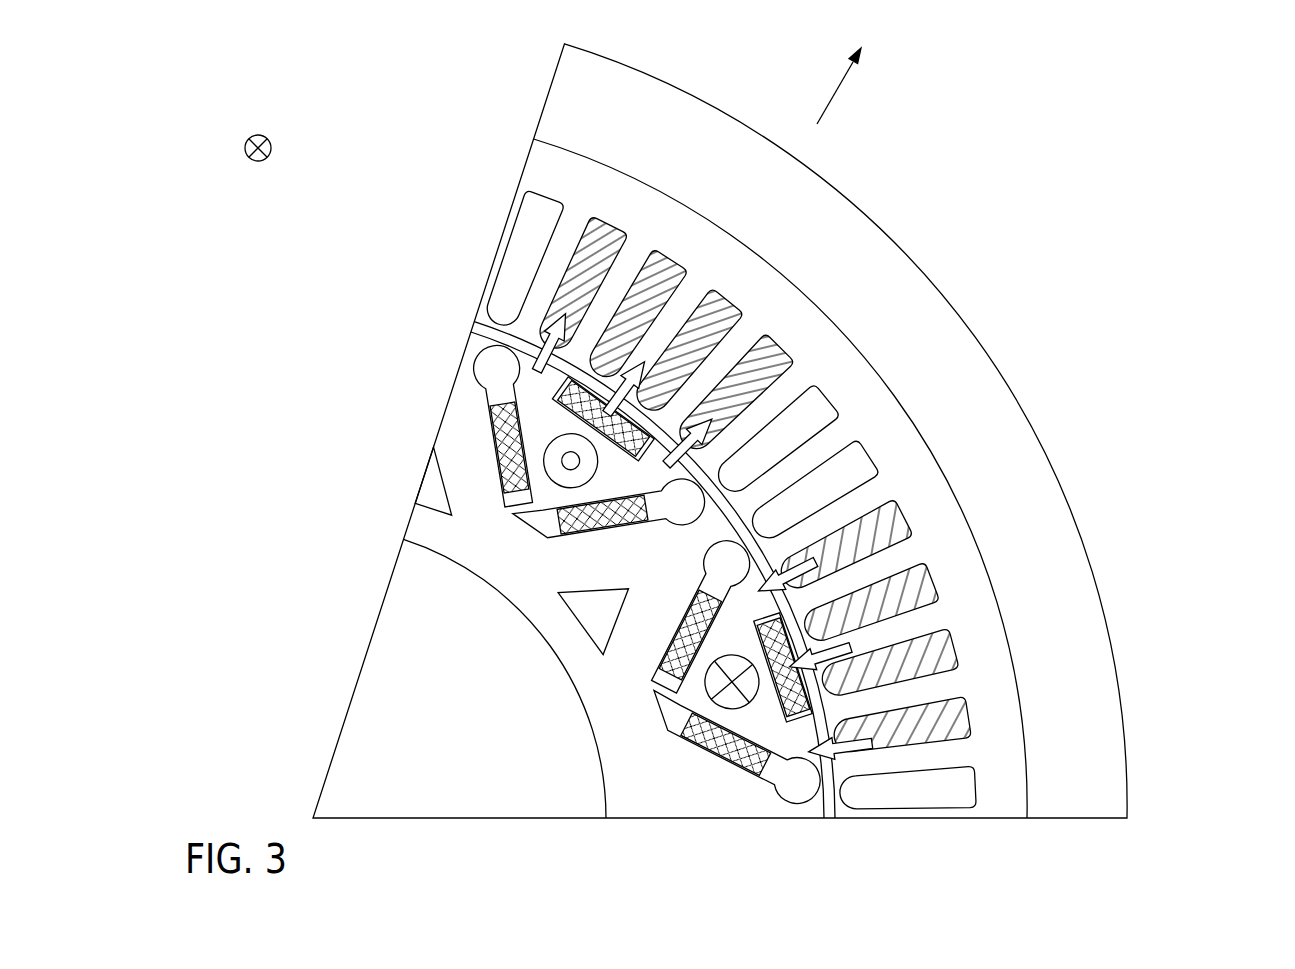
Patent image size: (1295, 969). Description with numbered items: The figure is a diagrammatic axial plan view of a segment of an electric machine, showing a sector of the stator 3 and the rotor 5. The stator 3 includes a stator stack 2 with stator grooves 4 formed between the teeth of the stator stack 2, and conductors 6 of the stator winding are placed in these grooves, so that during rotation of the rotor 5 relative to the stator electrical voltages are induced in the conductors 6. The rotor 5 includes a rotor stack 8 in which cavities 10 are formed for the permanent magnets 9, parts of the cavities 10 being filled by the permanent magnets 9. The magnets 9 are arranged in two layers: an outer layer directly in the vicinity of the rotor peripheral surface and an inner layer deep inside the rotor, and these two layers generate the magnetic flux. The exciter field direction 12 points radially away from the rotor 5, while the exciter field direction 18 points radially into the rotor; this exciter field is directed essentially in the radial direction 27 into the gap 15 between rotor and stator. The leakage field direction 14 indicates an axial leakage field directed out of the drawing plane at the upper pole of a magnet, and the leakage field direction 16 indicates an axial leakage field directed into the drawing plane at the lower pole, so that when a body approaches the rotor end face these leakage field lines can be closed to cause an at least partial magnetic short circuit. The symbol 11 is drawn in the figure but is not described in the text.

The stator stack 2 is at (670, 235).
The stator 3 is at (446, 155).
The stator grooves 4 is at (839, 343).
The conductors 6 is at (672, 362).
The rotor 5 is at (396, 345).
The rotor stack 8 is at (745, 802).
The permanent magnets 9 is at (753, 760).
The cavities 10 is at (685, 497).
The axis of rotation 11 is at (268, 138).
The exciter field direction 12 is at (545, 352).
The leakage field direction 14 is at (572, 433).
The gap 15 is at (458, 313).
The leakage field direction 16 is at (710, 682).
The exciter field direction 18 is at (831, 751).
The radial direction 27 is at (864, 86).